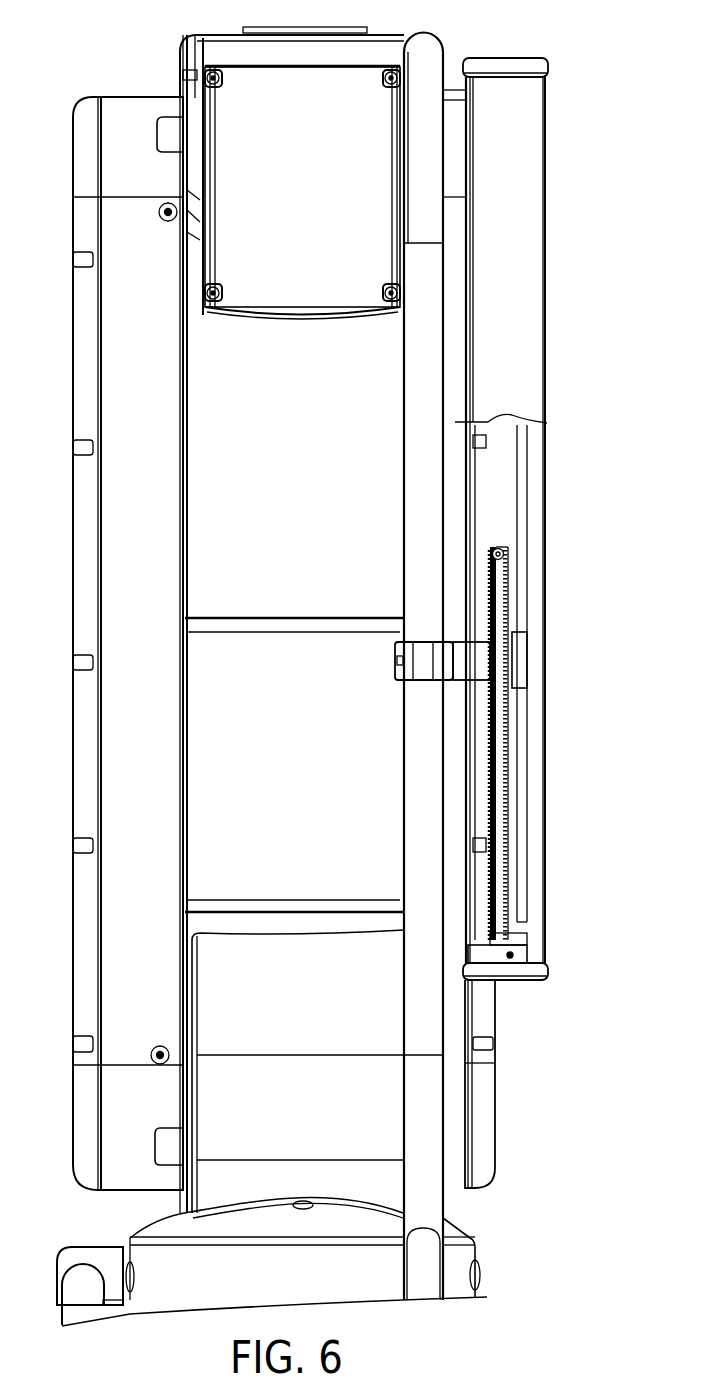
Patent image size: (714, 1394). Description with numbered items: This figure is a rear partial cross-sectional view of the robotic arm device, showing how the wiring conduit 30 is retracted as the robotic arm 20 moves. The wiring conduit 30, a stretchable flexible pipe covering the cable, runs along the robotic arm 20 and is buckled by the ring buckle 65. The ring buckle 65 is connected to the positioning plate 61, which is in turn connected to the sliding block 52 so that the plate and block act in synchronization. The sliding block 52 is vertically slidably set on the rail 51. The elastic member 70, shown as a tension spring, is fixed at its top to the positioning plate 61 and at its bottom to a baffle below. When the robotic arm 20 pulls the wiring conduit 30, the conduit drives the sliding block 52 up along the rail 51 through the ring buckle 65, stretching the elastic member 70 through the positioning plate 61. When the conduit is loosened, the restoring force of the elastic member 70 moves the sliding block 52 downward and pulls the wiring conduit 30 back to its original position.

The robotic arm 20 is at (144, 92).
The wiring conduit 30 is at (425, 313).
The rail 51 is at (523, 447).
The sliding block 52 is at (517, 657).
The positioning plate 61 is at (500, 532).
The ring buckle 65 is at (423, 653).
The elastic member 70 is at (508, 808).